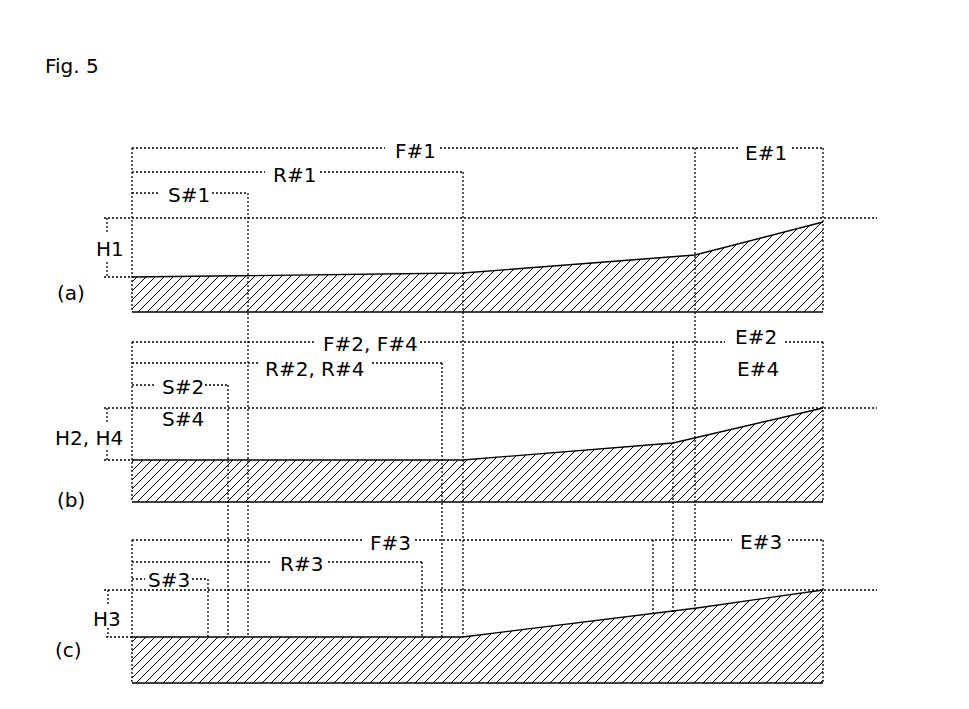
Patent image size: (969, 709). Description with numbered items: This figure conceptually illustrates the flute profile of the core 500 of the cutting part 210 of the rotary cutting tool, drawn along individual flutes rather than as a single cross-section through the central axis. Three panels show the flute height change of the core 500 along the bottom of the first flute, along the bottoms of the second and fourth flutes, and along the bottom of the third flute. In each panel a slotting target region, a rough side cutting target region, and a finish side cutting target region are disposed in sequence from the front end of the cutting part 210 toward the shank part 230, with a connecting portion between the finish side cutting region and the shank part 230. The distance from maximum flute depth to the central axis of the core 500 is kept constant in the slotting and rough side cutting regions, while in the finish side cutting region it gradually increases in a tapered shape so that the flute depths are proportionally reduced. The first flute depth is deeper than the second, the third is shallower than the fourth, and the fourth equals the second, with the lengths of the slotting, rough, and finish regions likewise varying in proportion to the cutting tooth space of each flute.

The cutting part 210 is at (554, 218).
The shank part 230 is at (849, 218).
The core 500 is at (594, 258).